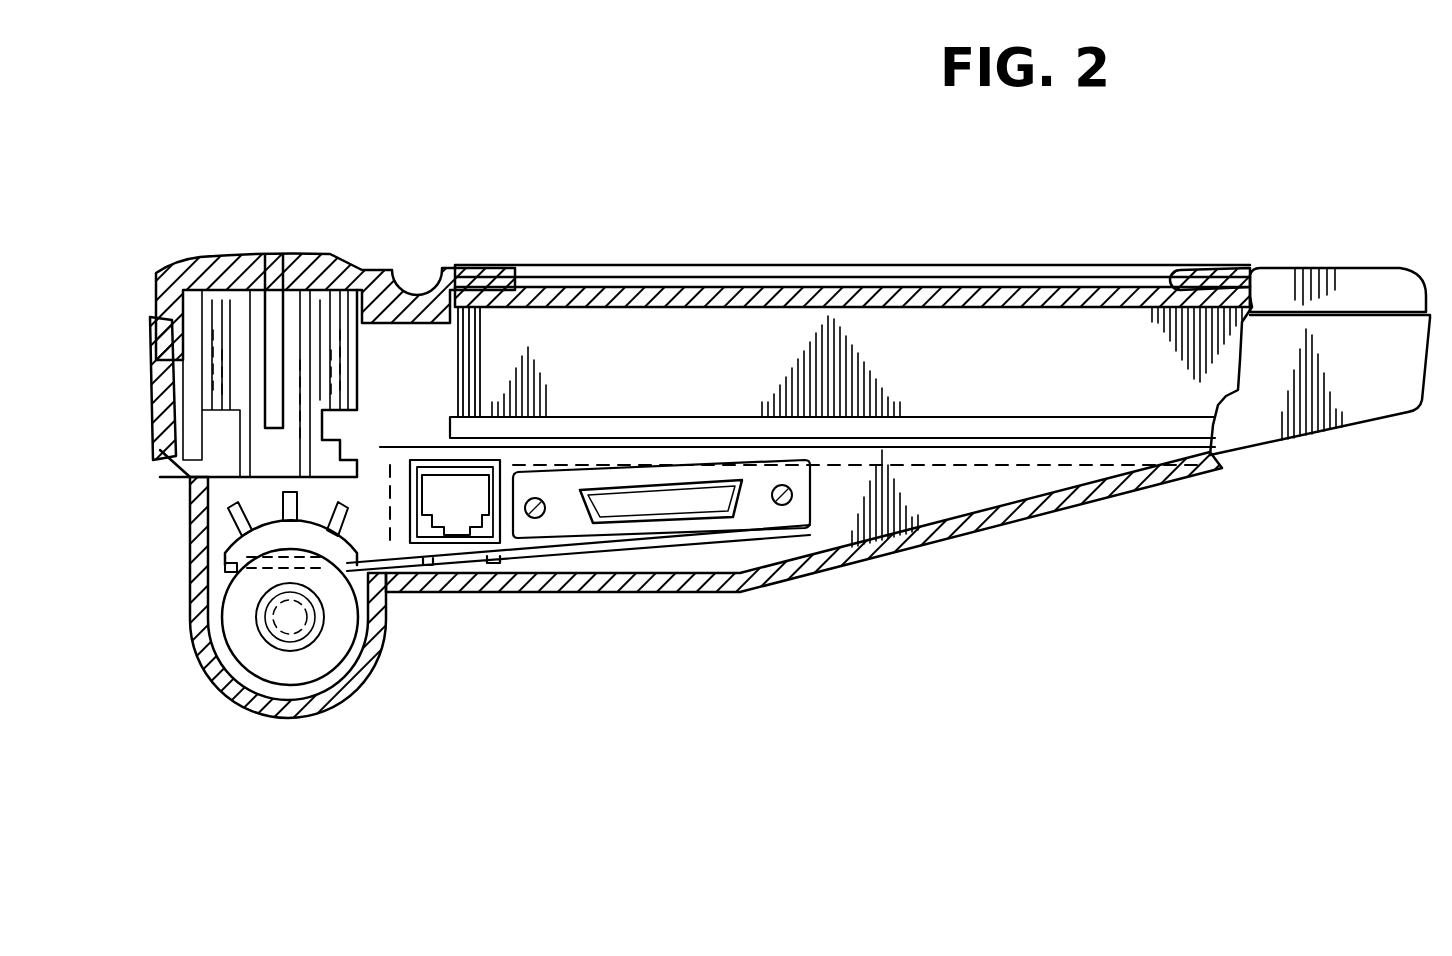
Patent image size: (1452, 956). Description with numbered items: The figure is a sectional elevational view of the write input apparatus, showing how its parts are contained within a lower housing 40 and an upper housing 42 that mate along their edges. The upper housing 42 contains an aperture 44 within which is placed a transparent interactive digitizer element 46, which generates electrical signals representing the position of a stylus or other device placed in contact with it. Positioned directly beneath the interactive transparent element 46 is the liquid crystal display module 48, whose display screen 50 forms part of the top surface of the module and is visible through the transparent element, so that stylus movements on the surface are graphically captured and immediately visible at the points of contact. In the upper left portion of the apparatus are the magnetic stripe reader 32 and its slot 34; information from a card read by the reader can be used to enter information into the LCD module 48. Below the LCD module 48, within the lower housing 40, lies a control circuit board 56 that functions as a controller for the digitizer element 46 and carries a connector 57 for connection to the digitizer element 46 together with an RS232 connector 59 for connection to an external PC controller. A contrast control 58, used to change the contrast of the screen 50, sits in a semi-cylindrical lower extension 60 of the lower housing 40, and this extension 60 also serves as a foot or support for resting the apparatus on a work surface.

The magnetic stripe reader 32 is at (243, 380).
The slot 34 is at (275, 258).
The lower housing 40 is at (1260, 450).
The upper housing 42 is at (1350, 268).
The aperture 44 is at (1182, 268).
The transparent interactive digitizer element 46 is at (778, 298).
The liquid crystal display module 48 is at (568, 327).
The display screen 50 is at (655, 317).
The control circuit board 56 is at (627, 545).
The connector 57 is at (440, 477).
The contrast control 58 is at (333, 645).
The RS232 connector 59 is at (660, 470).
The semi-cylindrical lower extension 60 is at (267, 713).